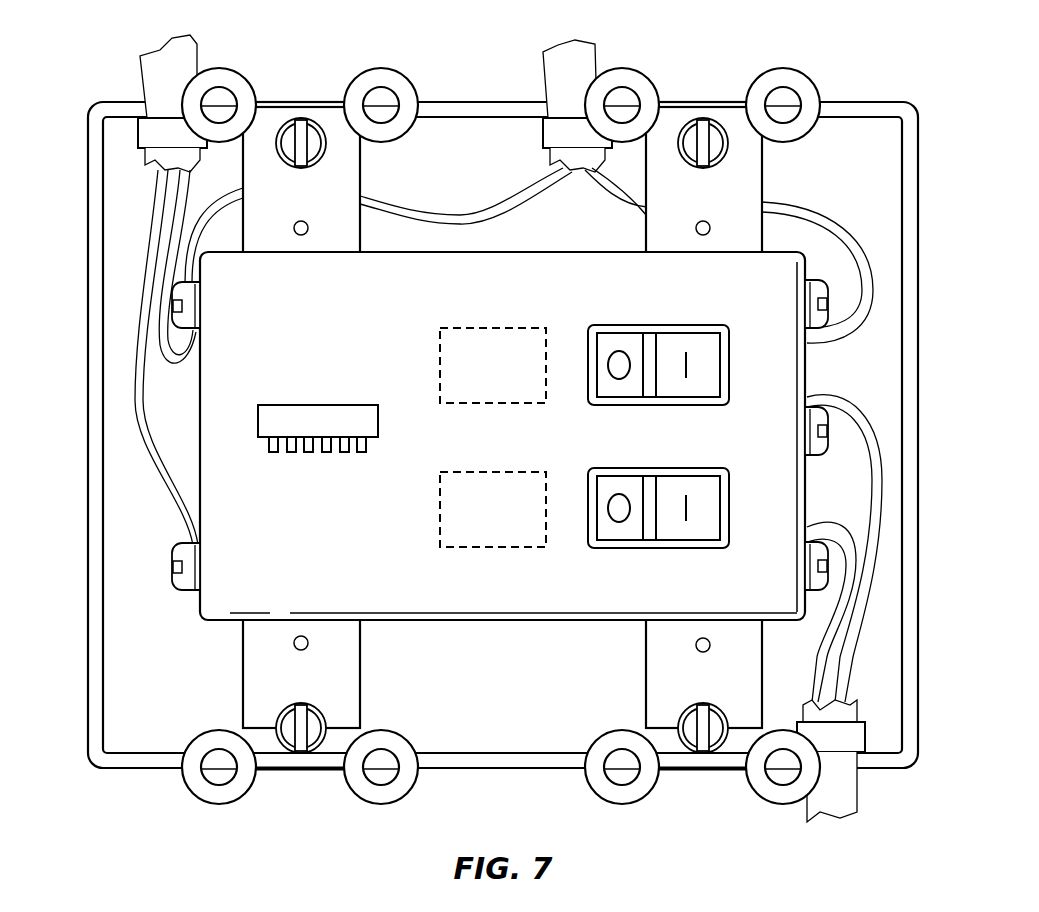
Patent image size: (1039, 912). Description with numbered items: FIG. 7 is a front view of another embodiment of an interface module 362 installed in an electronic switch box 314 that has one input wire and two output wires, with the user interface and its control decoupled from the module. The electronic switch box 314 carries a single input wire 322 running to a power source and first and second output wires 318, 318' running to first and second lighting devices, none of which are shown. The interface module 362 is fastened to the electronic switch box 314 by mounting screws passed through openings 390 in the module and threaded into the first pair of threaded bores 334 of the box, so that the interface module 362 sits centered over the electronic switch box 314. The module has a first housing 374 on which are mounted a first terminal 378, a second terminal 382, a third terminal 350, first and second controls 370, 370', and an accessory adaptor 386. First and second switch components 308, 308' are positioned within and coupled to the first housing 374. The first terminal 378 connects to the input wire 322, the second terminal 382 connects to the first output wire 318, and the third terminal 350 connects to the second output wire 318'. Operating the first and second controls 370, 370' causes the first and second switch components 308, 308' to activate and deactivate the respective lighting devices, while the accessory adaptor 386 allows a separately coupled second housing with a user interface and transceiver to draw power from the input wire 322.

The electronic switch box 314 is at (919, 152).
The first output wire 318 is at (141, 103).
The second output wire 318' is at (554, 102).
The input wire 322 is at (857, 786).
The first pair of threaded bores 334 is at (323, 127).
The openings 390 is at (281, 127).
The first housing 374 is at (197, 603).
The third terminal 350 is at (828, 287).
The first terminal 378 is at (820, 580).
The second terminal 382 is at (173, 549).
The accessory adaptor 386 is at (258, 415).
The first switch component 308 is at (493, 644).
The second switch component 308' is at (490, 228).
The first control 370 is at (782, 508).
The second control 370' is at (785, 365).
The interface module 362 is at (183, 643).